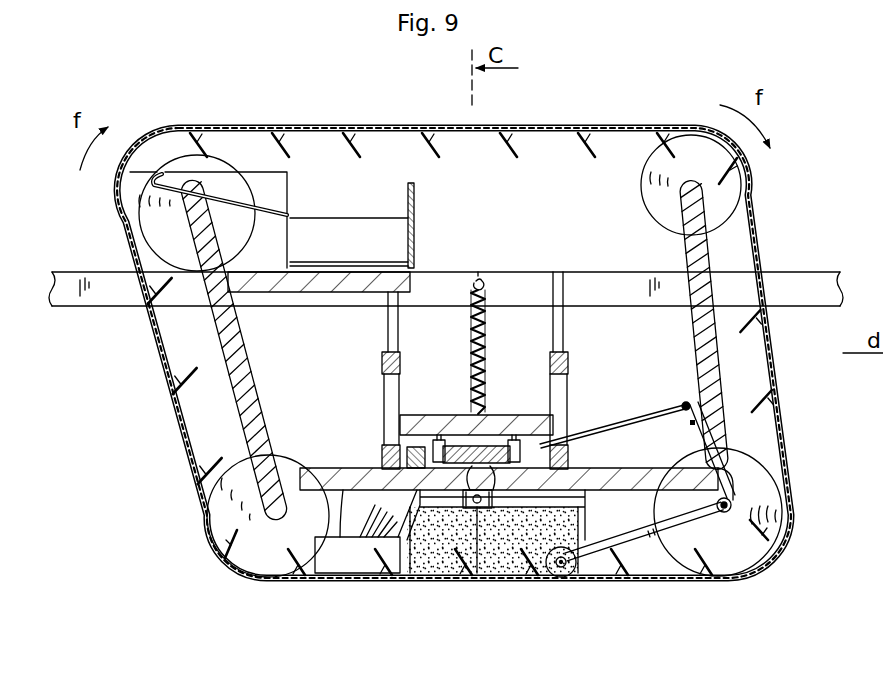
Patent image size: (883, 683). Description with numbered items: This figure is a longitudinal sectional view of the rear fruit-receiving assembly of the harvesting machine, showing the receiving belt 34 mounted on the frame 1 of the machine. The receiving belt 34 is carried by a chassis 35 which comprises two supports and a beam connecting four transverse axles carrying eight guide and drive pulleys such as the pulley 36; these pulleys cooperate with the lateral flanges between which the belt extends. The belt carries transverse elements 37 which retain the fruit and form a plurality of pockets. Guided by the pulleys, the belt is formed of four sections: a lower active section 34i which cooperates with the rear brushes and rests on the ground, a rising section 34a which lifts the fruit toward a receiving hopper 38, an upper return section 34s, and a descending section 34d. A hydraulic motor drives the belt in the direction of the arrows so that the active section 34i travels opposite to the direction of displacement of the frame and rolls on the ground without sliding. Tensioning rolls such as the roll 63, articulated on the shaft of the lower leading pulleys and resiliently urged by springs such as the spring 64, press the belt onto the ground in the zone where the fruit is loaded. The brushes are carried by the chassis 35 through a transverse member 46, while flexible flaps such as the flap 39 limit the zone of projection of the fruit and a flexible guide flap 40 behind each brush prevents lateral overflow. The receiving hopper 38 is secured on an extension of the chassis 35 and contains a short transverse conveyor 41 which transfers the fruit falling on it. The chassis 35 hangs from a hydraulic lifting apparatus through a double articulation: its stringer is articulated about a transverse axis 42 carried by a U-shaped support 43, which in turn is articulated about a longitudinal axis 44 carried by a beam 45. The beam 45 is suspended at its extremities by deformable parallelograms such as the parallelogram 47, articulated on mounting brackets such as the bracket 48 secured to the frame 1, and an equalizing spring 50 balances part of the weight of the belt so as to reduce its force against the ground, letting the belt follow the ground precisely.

The frame 1 is at (78, 296).
The receiving belt 34 is at (802, 452).
The rising section 34a is at (173, 393).
The descending section 34d is at (768, 337).
The lower active section 34i is at (440, 579).
The upper return section 34s is at (531, 132).
The chassis 35 is at (245, 386).
The guide and drive pulley 36 is at (779, 540).
The transverse element 37 is at (612, 560).
The receiving hopper 38 is at (294, 196).
The flexible flap 39 is at (648, 553).
The flexible guide flap 40 is at (352, 566).
The short transverse conveyor 41 is at (387, 200).
The transverse axis 42 is at (478, 576).
The U-shaped support 43 is at (505, 496).
The longitudinal axis 44 is at (452, 444).
The beam 45 is at (535, 394).
The transverse member 46 is at (406, 455).
The deformable parallelogram 47 is at (380, 387).
The mounting bracket 48 is at (398, 337).
The equalizing spring 50 is at (486, 358).
The tensioning roll 63 is at (567, 580).
The spring 64 is at (653, 413).